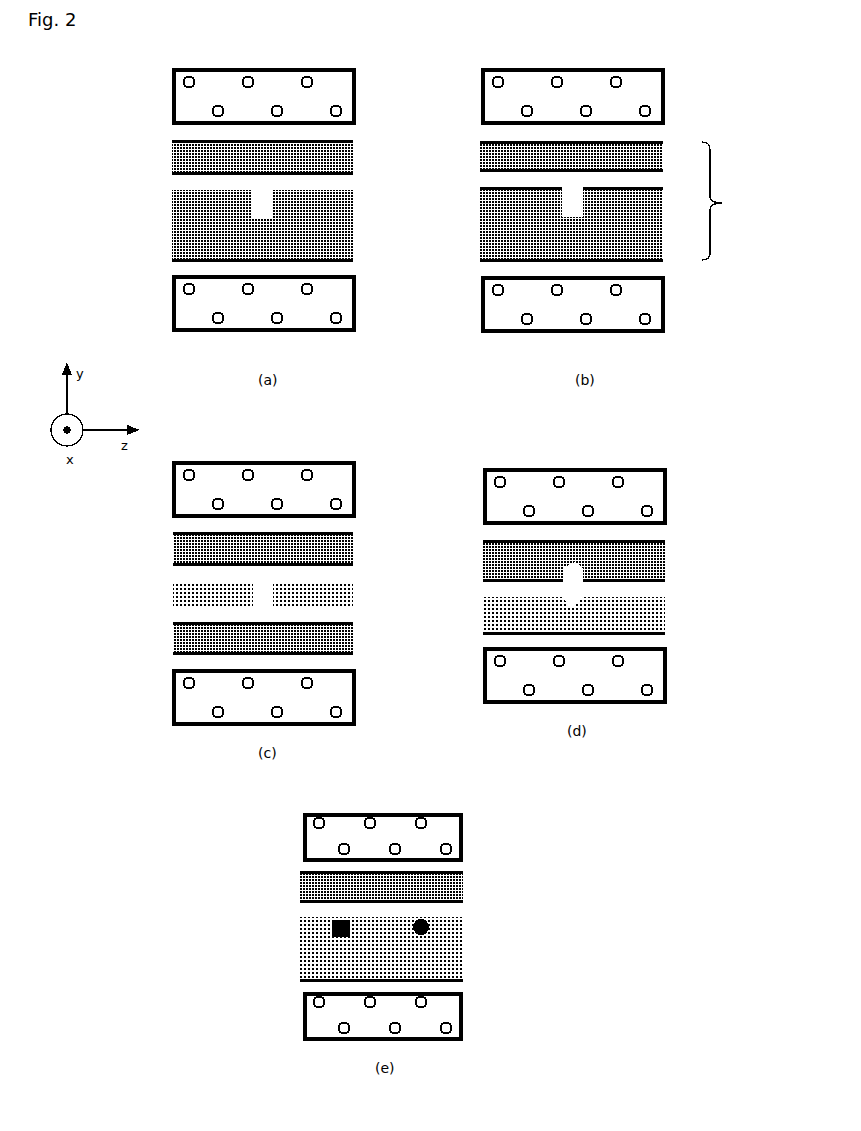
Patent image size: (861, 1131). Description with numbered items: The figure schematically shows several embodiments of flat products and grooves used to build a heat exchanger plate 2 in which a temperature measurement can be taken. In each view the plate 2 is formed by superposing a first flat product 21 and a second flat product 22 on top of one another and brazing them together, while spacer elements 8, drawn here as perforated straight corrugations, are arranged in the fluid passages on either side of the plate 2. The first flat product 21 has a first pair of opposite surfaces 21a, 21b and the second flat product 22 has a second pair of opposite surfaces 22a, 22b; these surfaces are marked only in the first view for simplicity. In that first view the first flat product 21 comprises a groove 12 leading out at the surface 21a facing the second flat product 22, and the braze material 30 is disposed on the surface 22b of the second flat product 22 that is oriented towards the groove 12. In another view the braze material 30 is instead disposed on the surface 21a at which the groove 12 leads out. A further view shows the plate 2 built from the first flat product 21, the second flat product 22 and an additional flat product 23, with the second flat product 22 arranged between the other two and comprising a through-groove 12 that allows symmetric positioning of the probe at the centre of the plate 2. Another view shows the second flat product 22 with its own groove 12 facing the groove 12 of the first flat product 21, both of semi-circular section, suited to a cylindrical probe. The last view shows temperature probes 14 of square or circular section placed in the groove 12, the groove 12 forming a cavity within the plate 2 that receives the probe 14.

The plate 2 is at (725, 201).
The spacer element 8 is at (273, 82).
The groove 12 is at (263, 218).
The temperature probe 14 is at (330, 925).
The first flat product 21 is at (186, 222).
The surface of the first pair 21a is at (323, 188).
The surface of the first pair 21b is at (305, 262).
The second flat product 22 is at (178, 161).
The surface of the second pair 22a is at (210, 140).
The surface of the second pair 22b is at (192, 175).
The additional flat product 23 is at (187, 553).
The braze material 30 is at (355, 262).